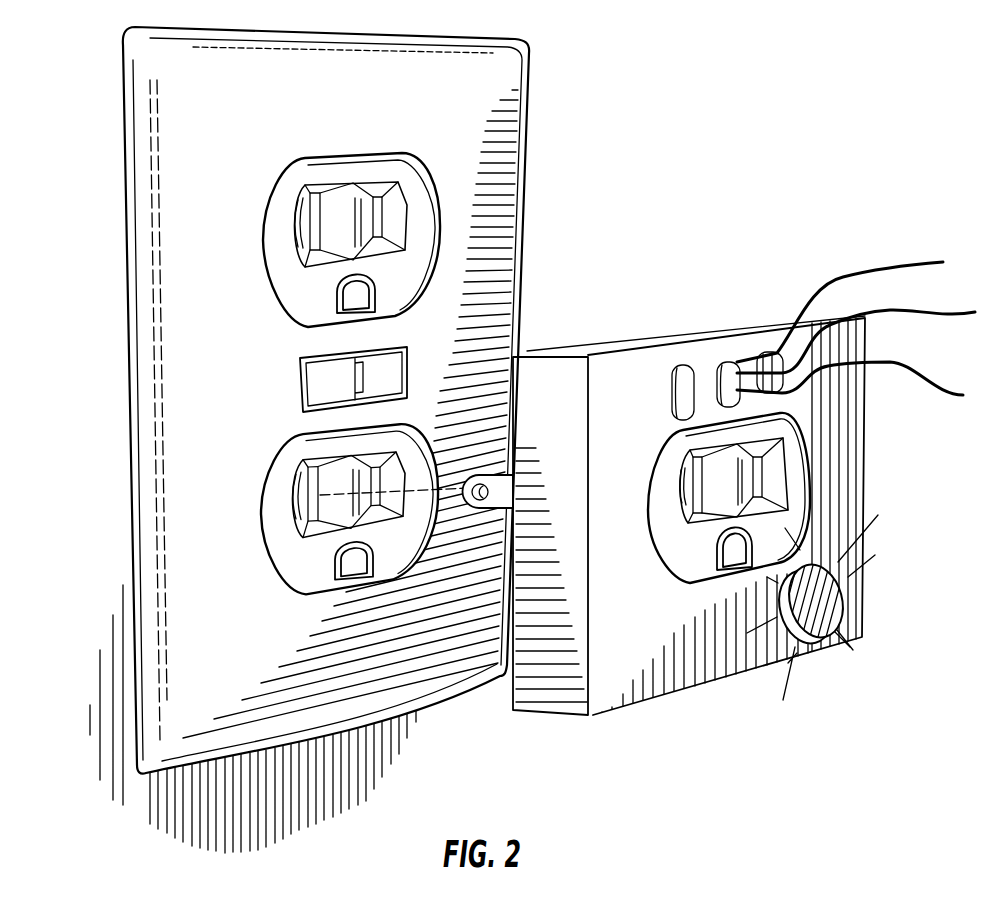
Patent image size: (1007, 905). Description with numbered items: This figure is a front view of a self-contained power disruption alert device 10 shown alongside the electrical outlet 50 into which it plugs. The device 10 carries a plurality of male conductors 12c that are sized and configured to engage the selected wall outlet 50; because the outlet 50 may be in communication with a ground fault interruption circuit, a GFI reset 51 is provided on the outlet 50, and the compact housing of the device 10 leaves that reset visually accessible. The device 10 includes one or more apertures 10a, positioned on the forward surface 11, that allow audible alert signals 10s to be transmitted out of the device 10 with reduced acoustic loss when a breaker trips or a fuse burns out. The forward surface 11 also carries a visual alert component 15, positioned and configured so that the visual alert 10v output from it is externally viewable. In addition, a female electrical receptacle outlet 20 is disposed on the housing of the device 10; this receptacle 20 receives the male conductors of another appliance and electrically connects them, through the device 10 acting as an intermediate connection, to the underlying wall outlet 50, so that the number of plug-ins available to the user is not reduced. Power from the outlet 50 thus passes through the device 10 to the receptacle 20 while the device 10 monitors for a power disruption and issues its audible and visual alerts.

The electrical outlet 50 is at (472, 157).
The GFI reset 51 is at (330, 382).
The male conductors 12c is at (500, 498).
The power disruption alert device 10 is at (642, 367).
The apertures 10a is at (778, 353).
The audible alert signals 10s is at (890, 268).
The forward surface 11 is at (633, 647).
The female electrical receptacle outlet 20 is at (802, 477).
The visual alert component 15 is at (850, 593).
The visual alert 10v is at (817, 605).